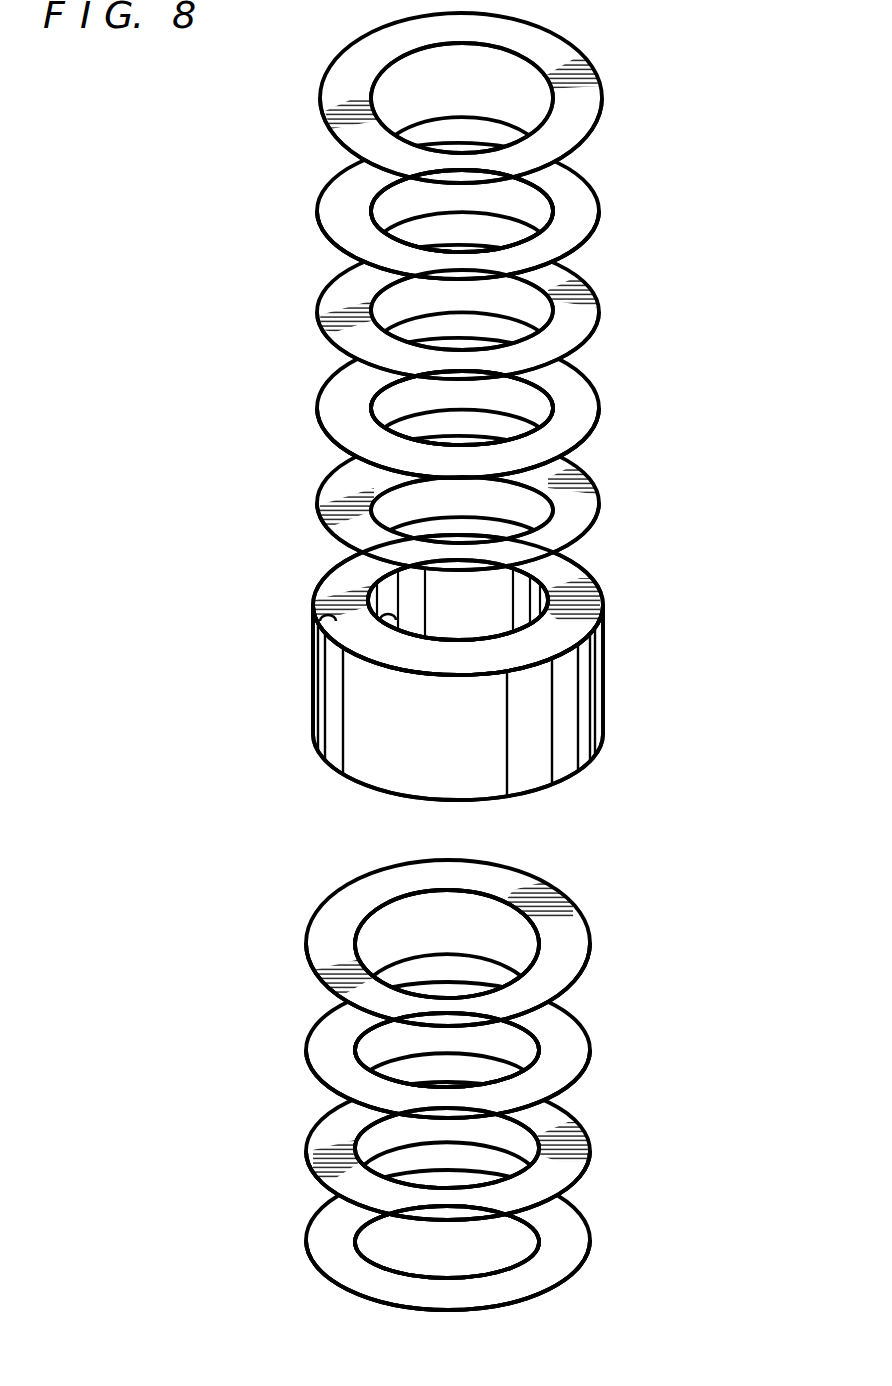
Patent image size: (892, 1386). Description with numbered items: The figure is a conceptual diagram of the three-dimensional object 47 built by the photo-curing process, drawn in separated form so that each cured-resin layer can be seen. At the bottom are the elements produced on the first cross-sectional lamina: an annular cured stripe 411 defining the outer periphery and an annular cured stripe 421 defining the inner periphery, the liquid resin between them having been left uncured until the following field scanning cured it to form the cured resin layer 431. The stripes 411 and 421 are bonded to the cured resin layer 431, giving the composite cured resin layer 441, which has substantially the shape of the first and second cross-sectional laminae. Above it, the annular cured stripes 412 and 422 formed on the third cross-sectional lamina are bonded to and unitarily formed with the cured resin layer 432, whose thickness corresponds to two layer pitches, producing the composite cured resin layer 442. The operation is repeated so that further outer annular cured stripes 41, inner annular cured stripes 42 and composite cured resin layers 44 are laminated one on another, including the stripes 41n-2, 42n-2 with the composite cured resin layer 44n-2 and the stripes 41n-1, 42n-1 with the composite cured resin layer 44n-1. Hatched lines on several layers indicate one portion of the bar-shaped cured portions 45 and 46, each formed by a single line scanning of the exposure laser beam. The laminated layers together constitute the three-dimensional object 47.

The annular cured stripe 41 is at (320, 194).
The annular cured stripe 42 is at (372, 222).
The composite cured resin layer 44 is at (602, 105).
The bar-shaped cured portion 45 is at (332, 282).
The bar-shaped cured portion 46 is at (323, 112).
The composite cured resin layer 44n-1 is at (597, 283).
The annular cured stripe 41n-1 is at (320, 358).
The annular cured stripe 42n-1 is at (372, 402).
The composite cured resin layer 44n-2 is at (597, 497).
The annular cured stripe 41n-2 is at (316, 612).
The annular cured stripe 42n-2 is at (385, 617).
The three-dimensional object 47 is at (746, 606).
The cured resin layer 432 is at (345, 912).
The composite cured resin layer 442 is at (592, 935).
The annular cured stripe 412 is at (307, 1027).
The annular cured stripe 422 is at (360, 1047).
The cured resin layer 431 is at (560, 1100).
The composite cured resin layer 441 is at (587, 1140).
The annular cured stripe 411 is at (303, 1227).
The annular cured stripe 421 is at (360, 1248).